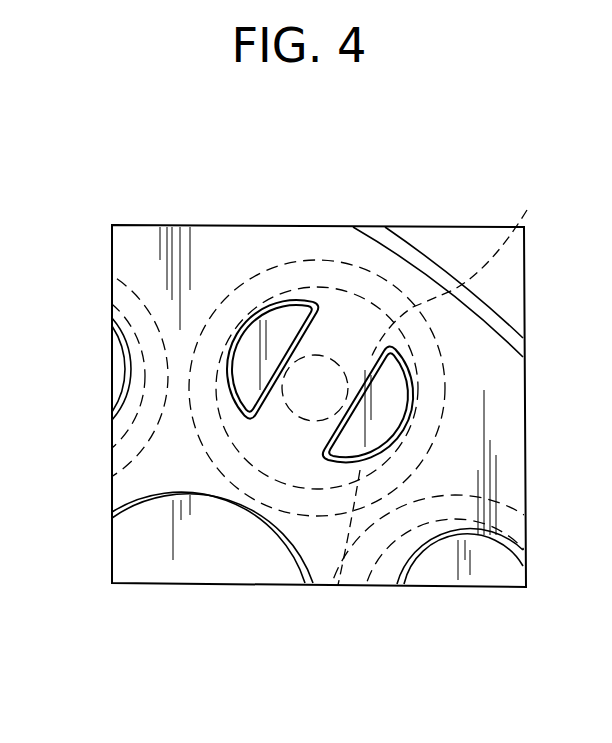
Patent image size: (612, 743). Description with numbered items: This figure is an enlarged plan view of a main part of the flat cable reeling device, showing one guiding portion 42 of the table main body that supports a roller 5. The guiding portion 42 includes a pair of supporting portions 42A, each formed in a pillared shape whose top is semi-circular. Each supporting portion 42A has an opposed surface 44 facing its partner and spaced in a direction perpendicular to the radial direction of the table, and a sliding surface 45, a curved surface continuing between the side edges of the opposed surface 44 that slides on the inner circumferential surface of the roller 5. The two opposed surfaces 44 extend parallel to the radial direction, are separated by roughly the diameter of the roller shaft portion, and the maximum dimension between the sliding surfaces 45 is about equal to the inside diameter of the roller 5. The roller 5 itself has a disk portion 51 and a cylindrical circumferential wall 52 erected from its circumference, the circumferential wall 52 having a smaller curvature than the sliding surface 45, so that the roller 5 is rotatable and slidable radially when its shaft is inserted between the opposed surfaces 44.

The roller 5 is at (333, 262).
The guiding portion 42 is at (254, 506).
The supporting portion 42A is at (240, 417).
The opposed surface 44 is at (272, 405).
The sliding surface 45 is at (243, 398).
The disk portion 51 is at (440, 383).
The circumferential wall 52 is at (404, 291).